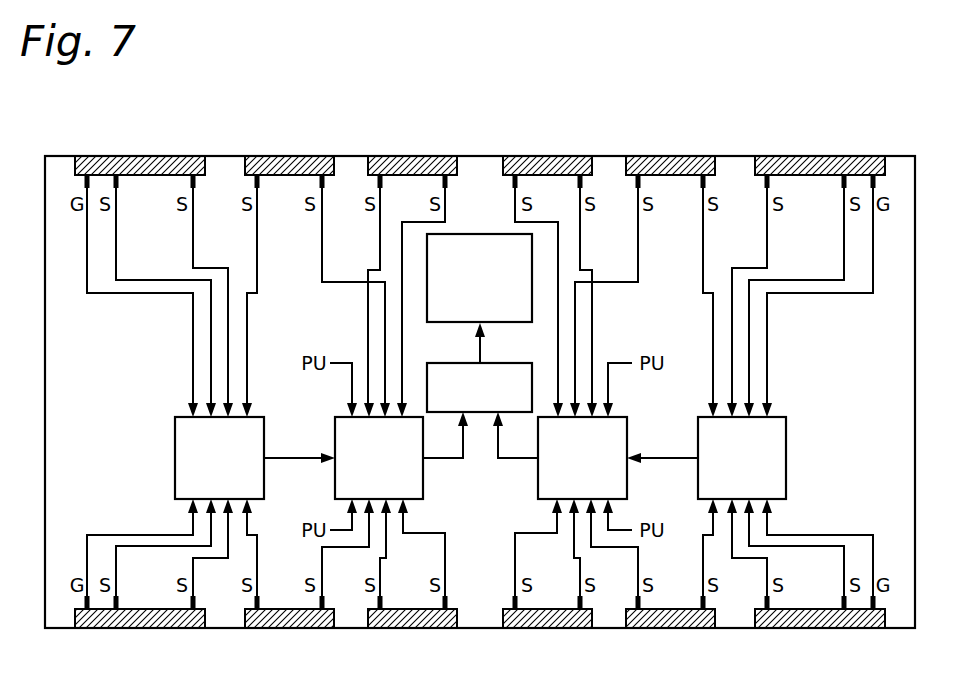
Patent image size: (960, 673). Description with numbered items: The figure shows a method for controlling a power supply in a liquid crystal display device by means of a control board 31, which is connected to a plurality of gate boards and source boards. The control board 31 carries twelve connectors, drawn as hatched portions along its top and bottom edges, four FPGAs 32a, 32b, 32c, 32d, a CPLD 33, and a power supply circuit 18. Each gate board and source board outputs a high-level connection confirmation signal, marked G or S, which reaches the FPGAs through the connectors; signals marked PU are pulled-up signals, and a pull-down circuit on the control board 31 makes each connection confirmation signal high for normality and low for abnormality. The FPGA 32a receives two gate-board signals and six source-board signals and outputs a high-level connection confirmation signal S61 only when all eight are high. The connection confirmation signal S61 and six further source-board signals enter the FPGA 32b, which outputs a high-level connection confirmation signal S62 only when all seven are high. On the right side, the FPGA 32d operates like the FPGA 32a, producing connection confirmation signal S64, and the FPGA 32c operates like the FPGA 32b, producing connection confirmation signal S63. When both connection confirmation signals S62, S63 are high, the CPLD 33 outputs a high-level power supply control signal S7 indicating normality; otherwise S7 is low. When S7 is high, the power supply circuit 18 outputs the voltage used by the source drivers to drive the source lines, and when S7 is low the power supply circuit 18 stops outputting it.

The control board 31 is at (481, 156).
The power supply circuit 18 is at (481, 233).
The CPLD 33 is at (458, 363).
The FPGA 32a is at (176, 437).
The FPGA 32b is at (336, 437).
The FPGA 32c is at (627, 437).
The FPGA 32d is at (787, 437).
The connection confirmation signal S61 is at (290, 462).
The connection confirmation signal S62 is at (450, 462).
The connection confirmation signal S63 is at (510, 462).
The connection confirmation signal S64 is at (672, 462).
The power supply control signal S7 is at (484, 351).